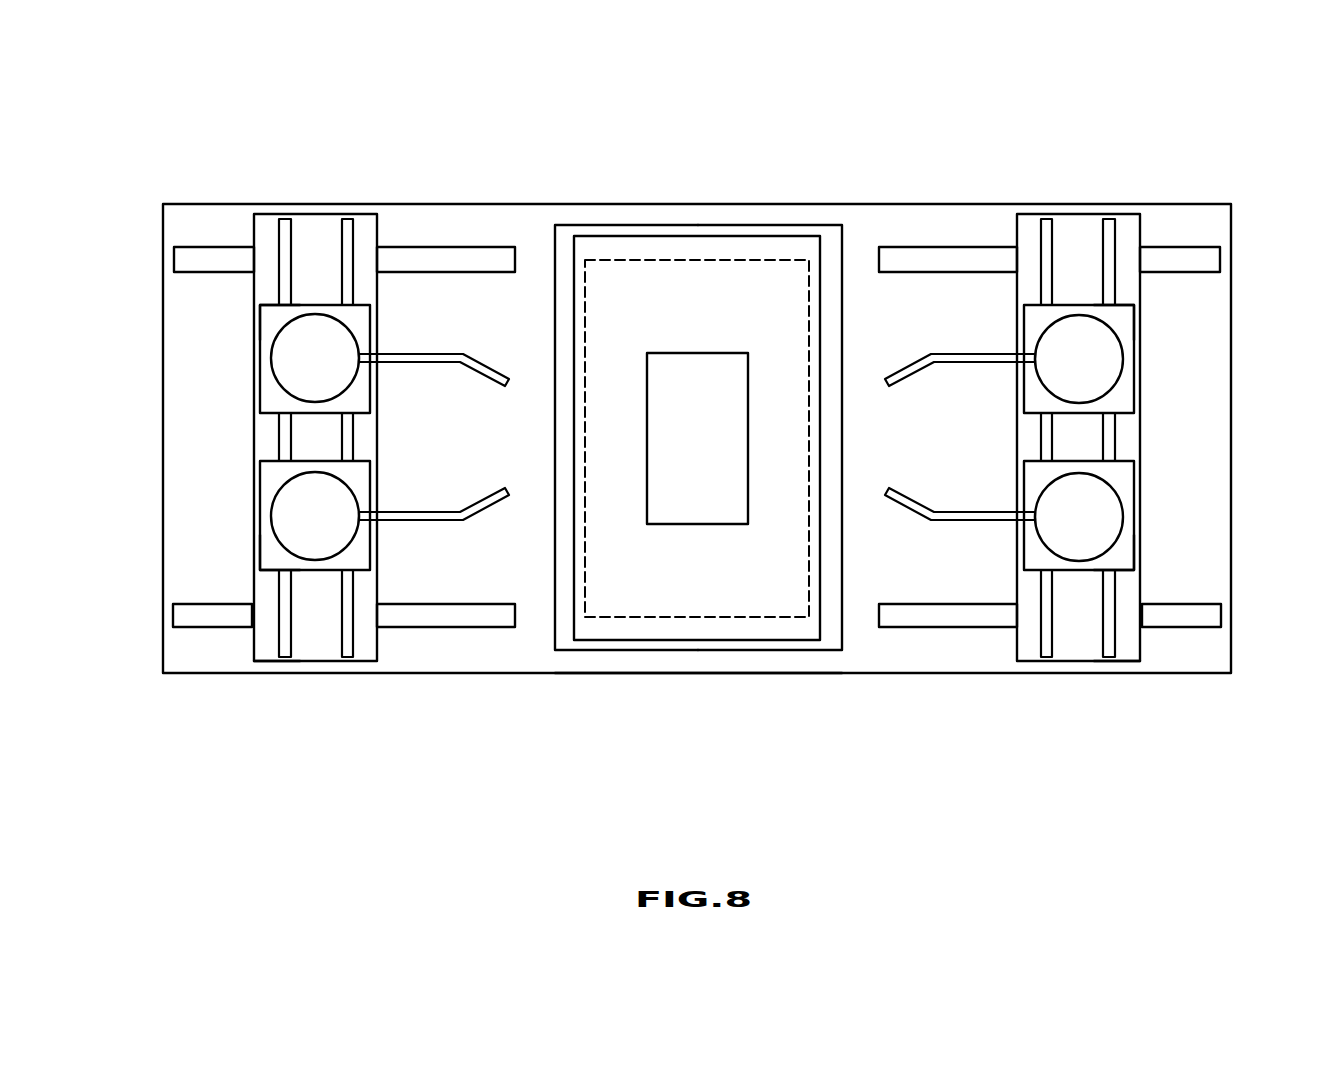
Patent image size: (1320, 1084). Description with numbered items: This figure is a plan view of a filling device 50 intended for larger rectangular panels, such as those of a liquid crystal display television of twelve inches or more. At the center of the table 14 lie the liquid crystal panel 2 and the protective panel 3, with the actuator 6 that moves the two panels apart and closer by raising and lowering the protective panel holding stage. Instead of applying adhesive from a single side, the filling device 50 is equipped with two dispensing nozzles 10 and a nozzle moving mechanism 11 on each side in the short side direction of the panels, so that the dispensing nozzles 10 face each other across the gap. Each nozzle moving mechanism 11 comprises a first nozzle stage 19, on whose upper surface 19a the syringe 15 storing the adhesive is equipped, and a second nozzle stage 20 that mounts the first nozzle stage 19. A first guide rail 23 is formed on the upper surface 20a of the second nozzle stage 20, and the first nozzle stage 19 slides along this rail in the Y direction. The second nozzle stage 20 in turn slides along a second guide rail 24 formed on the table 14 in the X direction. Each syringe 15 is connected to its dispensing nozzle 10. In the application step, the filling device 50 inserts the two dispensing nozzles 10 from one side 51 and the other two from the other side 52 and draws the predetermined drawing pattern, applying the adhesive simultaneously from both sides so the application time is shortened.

The filling device 50 is at (698, 53).
The nozzle moving mechanism 11 is at (203, 196).
The table 14 is at (693, 673).
The one side 51 is at (565, 447).
The other side 52 is at (829, 447).
The protective panel 3 is at (772, 236).
The liquid crystal panel 2 is at (720, 260).
The actuator 6 is at (662, 353).
The second guide rail 24 is at (398, 247).
The second nozzle stage 20 is at (314, 650).
The upper surface 20a is at (265, 644).
The first guide rail 23 is at (284, 657).
The first nozzle stage 19 is at (258, 340).
The upper surface 19a is at (270, 320).
The syringe 15 is at (316, 358).
The dispensing nozzle 10 is at (441, 354).